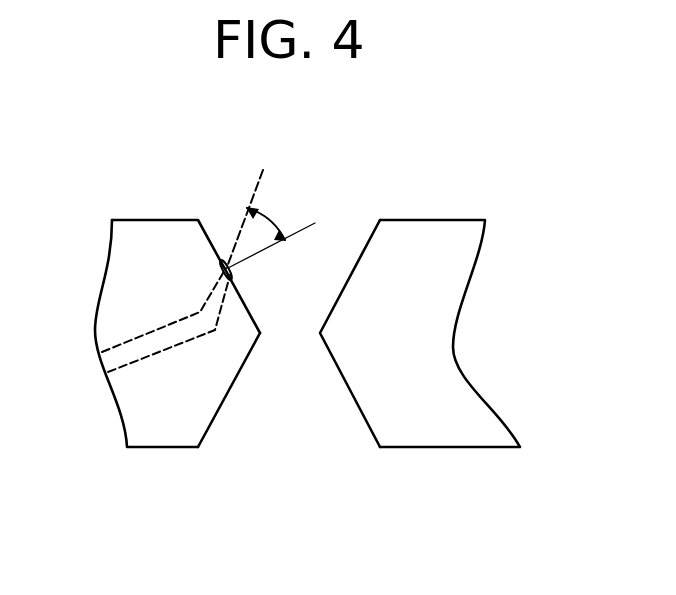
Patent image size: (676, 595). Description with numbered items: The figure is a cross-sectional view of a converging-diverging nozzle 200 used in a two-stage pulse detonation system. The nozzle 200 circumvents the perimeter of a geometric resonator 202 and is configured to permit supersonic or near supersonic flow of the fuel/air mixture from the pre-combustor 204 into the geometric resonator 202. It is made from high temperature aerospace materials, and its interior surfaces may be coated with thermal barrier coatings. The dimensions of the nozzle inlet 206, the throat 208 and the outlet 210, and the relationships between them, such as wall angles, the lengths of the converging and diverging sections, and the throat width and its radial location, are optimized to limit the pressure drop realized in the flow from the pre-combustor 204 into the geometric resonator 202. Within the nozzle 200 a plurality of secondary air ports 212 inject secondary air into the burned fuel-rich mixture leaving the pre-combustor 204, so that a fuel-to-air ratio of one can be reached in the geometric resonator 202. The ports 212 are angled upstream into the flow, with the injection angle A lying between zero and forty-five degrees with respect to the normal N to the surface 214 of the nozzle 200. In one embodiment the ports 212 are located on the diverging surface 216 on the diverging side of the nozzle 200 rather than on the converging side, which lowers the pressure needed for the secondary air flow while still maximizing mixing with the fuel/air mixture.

The converging-diverging nozzle 200 is at (292, 372).
The geometric resonator 202 is at (168, 473).
The pre-combustor 204 is at (247, 140).
The nozzle inlet 206 is at (333, 190).
The throat 208 is at (295, 338).
The outlet 210 is at (268, 447).
The secondary air ports 212 is at (225, 262).
The surface of the nozzle 214 is at (245, 297).
The diverging surface 216 is at (212, 426).